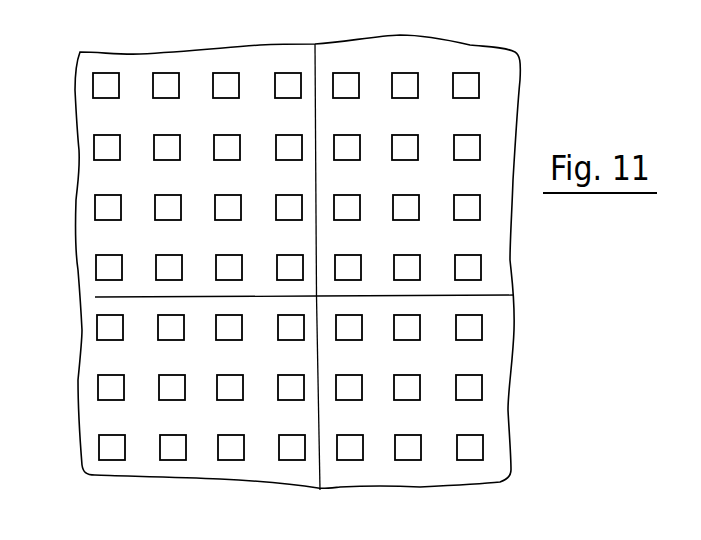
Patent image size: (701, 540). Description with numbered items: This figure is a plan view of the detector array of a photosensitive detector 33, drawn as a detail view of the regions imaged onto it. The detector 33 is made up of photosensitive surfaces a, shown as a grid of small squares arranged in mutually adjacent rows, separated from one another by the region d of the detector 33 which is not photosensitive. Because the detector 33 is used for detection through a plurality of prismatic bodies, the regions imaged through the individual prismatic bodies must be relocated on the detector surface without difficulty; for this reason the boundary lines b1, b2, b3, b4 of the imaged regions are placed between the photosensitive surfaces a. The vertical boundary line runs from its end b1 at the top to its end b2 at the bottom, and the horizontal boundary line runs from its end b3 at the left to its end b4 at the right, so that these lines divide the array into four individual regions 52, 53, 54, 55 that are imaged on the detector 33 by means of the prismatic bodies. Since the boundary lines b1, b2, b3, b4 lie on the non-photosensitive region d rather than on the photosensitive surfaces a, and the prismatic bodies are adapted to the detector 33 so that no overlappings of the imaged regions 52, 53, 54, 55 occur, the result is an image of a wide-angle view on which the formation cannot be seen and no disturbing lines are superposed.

The photosensitive detector 33 is at (522, 258).
The imaged region 52 is at (443, 57).
The imaged region 53 is at (147, 468).
The imaged region 54 is at (455, 474).
The imaged region 55 is at (198, 146).
The photosensitive surface a is at (101, 88).
The non-photosensitive region d is at (136, 76).
The boundary line b1 is at (315, 78).
The boundary line b2 is at (315, 470).
The boundary line b3 is at (95, 297).
The boundary line b4 is at (487, 295).